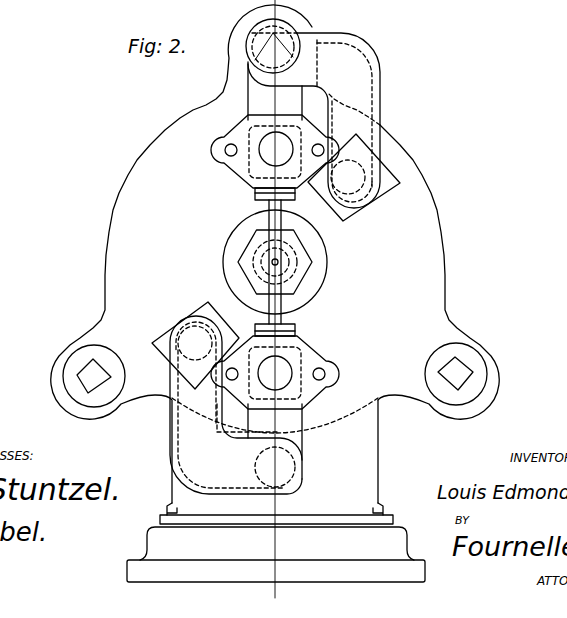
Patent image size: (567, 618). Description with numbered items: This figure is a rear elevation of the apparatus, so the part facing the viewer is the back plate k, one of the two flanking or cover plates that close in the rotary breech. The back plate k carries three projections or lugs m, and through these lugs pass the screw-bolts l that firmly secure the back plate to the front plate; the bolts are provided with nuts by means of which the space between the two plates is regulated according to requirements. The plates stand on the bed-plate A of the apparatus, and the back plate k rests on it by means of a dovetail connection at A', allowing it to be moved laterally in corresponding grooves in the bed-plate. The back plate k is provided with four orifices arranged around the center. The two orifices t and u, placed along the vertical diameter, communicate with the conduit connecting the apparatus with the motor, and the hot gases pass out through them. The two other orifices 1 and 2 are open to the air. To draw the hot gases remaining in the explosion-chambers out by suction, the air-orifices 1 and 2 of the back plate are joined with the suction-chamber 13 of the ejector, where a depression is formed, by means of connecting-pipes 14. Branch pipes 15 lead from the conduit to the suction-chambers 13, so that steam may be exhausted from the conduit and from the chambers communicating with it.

The air-orifice 1 is at (385, 178).
The air-orifice 2 is at (205, 303).
The suction-chamber 13 is at (275, 262).
The connecting-pipes 14 is at (366, 77).
The branch pipes 15 is at (280, 263).
The back plate k is at (275, 254).
The projections or lugs m is at (247, 21).
The screw-bolts l is at (80, 375).
The orifice t is at (258, 167).
The orifice u is at (297, 365).
The bed-plate A is at (276, 548).
The dovetail connection A' is at (273, 494).